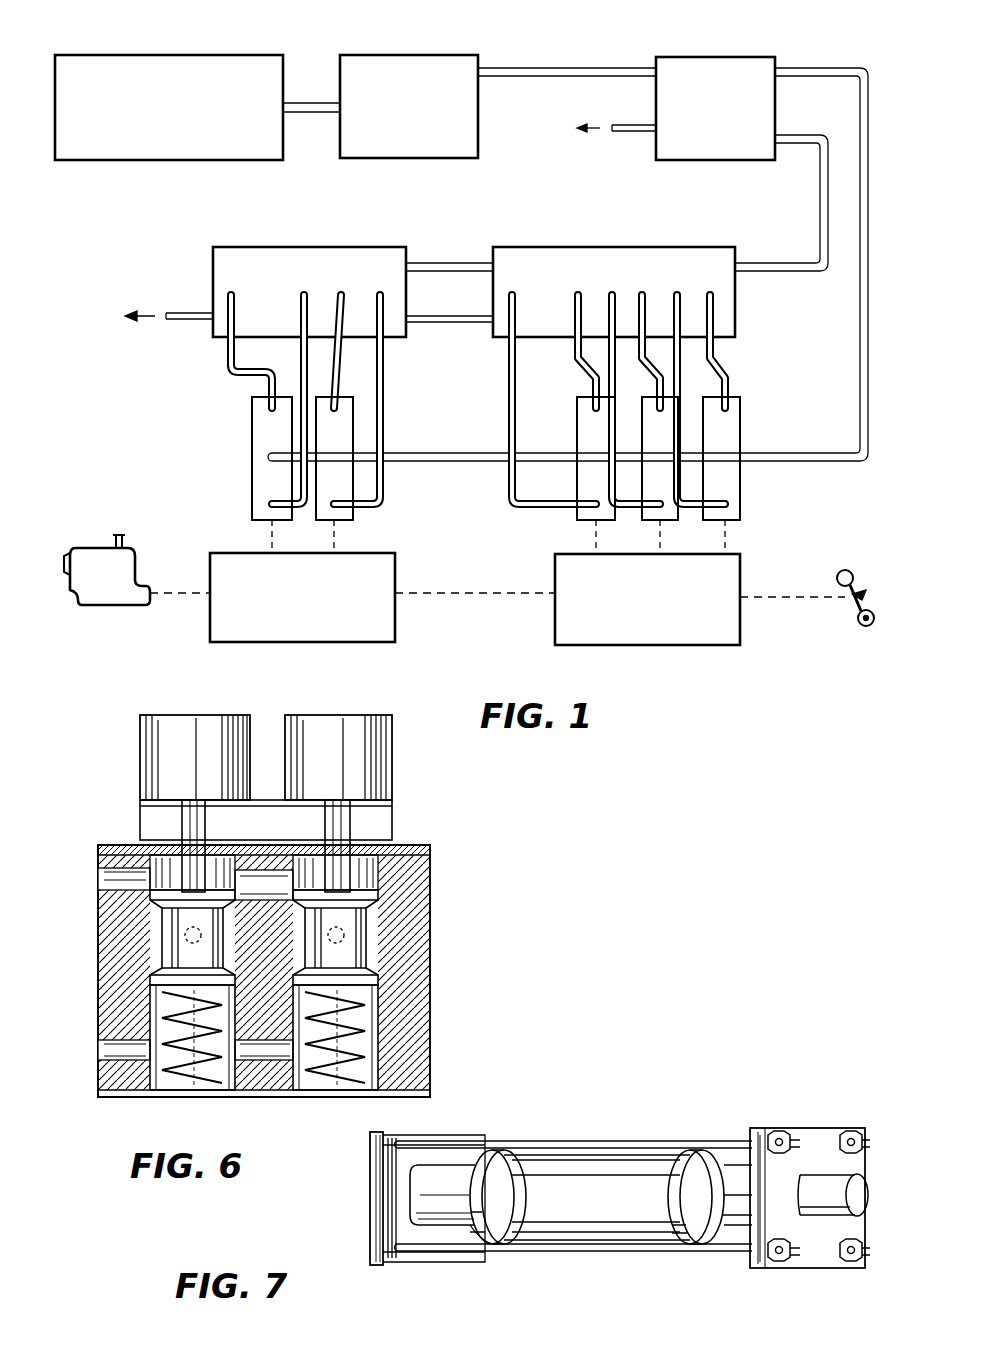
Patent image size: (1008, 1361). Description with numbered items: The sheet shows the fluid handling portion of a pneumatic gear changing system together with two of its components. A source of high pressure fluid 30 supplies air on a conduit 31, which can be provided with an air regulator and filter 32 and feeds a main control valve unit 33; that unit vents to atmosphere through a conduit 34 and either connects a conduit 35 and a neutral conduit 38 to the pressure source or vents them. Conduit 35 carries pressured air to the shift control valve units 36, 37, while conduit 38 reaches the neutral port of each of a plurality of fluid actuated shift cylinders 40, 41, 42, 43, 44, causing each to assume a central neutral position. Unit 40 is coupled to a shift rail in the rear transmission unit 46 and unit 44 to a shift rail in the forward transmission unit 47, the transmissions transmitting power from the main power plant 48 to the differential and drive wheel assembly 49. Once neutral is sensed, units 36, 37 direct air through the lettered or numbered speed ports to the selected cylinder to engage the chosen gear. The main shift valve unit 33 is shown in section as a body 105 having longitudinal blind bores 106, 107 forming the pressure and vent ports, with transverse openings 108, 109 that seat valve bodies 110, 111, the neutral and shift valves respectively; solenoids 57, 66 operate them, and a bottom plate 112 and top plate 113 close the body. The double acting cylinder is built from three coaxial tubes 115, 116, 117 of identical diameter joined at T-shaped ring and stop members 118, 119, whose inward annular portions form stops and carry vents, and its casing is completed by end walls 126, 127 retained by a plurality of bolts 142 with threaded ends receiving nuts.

In FIG. 1, the source of high pressure fluid 30 is at (152, 55).
In FIG. 1, the conduit 31 is at (314, 103).
In FIG. 1, the air regulator and filter 32 is at (426, 55).
In FIG. 1, the main control valve unit 33 is at (718, 57).
In FIG. 6, the main control valve unit 33 is at (98, 975).
In FIG. 1, the vent conduit 34 is at (634, 131).
In FIG. 1, the conduit 35 is at (820, 200).
In FIG. 1, the shift control valve unit 36 is at (640, 247).
In FIG. 1, the shift control valve unit 37 is at (318, 247).
In FIG. 1, the neutral conduit 38 is at (868, 208).
In FIG. 1, the fluid actuated shift cylinder 40 is at (740, 423).
In FIG. 1, the fluid actuated shift cylinder 41 is at (668, 521).
In FIG. 1, the fluid actuated shift cylinder 42 is at (577, 522).
In FIG. 1, the fluid actuated shift cylinder 43 is at (340, 520).
In FIG. 1, the fluid actuated shift cylinder 44 is at (252, 510).
In FIG. 1, the rear transmission unit 46 is at (702, 645).
In FIG. 1, the forward transmission unit 47 is at (318, 642).
In FIG. 1, the main power plant 48 is at (126, 605).
In FIG. 1, the differential and drive wheel assembly 49 is at (858, 590).
In FIG. 6, the solenoid 57 is at (140, 766).
In FIG. 6, the solenoid 66 is at (392, 770).
In FIG. 6, the body 105 is at (462, 956).
In FIG. 6, the longitudinal blind bore 106 is at (98, 1066).
In FIG. 6, the longitudinal blind bore 107 is at (120, 882).
In FIG. 6, the transverse opening 108 is at (314, 938).
In FIG. 6, the transverse opening 109 is at (208, 895).
In FIG. 6, the valve body 110 is at (193, 1015).
In FIG. 6, the valve body 111 is at (345, 1000).
In FIG. 6, the bottom plate 112 is at (414, 1097).
In FIG. 6, the top plate 113 is at (398, 848).
In FIG. 7, the tube 115 is at (450, 1228).
In FIG. 7, the tube 116 is at (578, 1158).
In FIG. 7, the tube 117 is at (745, 1232).
In FIG. 7, the ring and stop member 118 is at (700, 1252).
In FIG. 7, the ring and stop member 119 is at (500, 1252).
In FIG. 7, the end wall 126 is at (822, 1106).
In FIG. 7, the end wall 127 is at (372, 1210).
In FIG. 7, the bolt 142 is at (604, 1141).